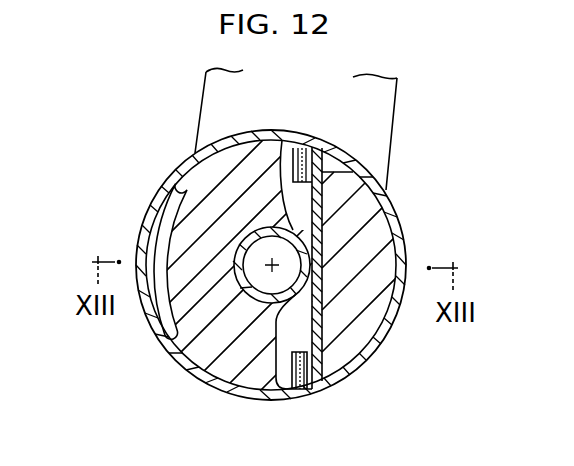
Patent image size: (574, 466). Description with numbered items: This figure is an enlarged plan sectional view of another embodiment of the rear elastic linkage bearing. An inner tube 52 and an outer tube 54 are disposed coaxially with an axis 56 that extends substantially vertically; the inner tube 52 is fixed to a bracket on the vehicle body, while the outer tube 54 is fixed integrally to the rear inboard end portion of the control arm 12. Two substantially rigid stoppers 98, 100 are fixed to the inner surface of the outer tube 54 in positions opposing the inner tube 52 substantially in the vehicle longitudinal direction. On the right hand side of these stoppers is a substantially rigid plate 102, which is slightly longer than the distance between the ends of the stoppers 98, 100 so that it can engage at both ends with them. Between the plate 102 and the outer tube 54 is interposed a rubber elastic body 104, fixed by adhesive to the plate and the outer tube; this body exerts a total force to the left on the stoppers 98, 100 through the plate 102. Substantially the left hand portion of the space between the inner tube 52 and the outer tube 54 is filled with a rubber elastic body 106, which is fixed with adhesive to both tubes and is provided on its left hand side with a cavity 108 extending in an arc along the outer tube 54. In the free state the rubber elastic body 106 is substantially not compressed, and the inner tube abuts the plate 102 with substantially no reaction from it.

The control arm 12 is at (388, 100).
The inner tube 52 is at (306, 233).
The outer tube 54 is at (210, 150).
The axis 56 is at (271, 263).
The stopper 98 is at (311, 146).
The stopper 100 is at (315, 374).
The plate 102 is at (314, 350).
The rubber elastic body 104 is at (366, 325).
The rubber elastic body 106 is at (203, 350).
The cavity 108 is at (156, 238).